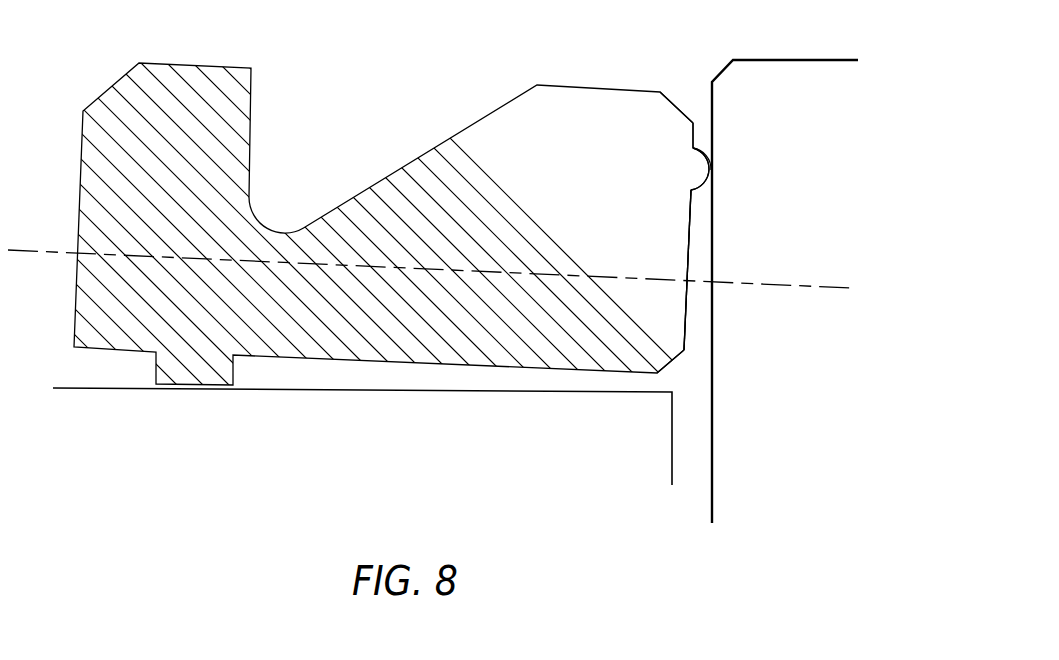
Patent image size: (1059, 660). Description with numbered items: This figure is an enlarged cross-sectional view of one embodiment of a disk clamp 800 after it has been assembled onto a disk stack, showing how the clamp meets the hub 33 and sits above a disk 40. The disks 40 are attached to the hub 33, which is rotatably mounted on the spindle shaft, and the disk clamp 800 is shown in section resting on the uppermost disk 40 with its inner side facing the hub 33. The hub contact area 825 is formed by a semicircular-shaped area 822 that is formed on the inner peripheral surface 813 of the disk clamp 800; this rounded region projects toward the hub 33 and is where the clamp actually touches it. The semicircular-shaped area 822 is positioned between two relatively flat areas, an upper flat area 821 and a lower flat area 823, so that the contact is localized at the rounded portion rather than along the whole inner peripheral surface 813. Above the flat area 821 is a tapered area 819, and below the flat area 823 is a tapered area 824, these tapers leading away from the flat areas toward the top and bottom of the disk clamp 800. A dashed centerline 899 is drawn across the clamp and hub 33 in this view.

The disk clamp 800 is at (600, 88).
The tapered area 819 is at (676, 111).
The flat area 821 is at (693, 134).
The semicircular-shaped area 822 is at (692, 168).
The flat area 823 is at (684, 232).
The tapered area 824 is at (660, 358).
The hub contact area 825 is at (713, 172).
The inner peripheral surface 813 is at (695, 323).
The hub 33 is at (788, 58).
The disk 40 is at (331, 463).
The centerline 899 is at (825, 287).